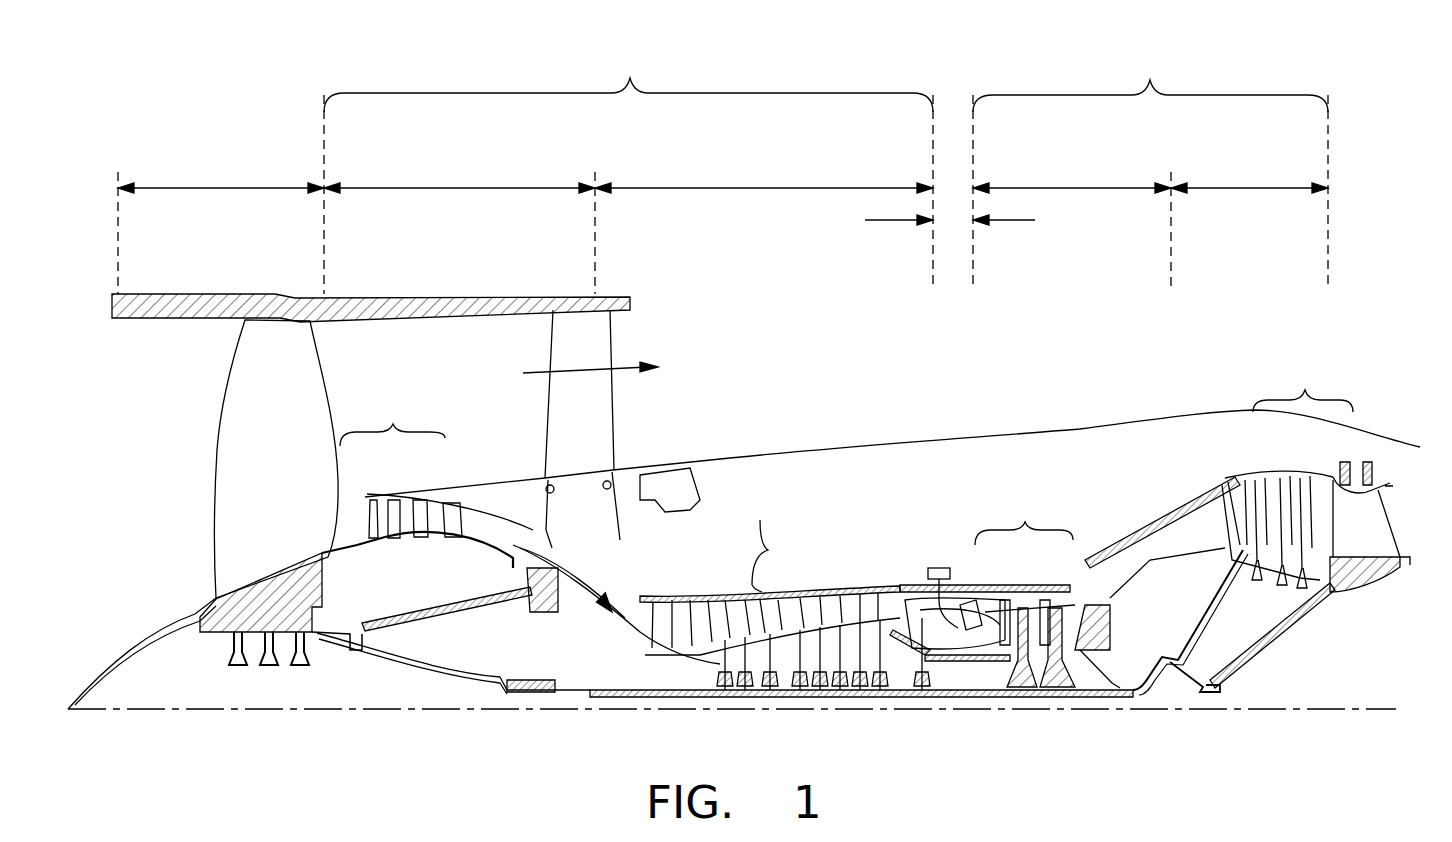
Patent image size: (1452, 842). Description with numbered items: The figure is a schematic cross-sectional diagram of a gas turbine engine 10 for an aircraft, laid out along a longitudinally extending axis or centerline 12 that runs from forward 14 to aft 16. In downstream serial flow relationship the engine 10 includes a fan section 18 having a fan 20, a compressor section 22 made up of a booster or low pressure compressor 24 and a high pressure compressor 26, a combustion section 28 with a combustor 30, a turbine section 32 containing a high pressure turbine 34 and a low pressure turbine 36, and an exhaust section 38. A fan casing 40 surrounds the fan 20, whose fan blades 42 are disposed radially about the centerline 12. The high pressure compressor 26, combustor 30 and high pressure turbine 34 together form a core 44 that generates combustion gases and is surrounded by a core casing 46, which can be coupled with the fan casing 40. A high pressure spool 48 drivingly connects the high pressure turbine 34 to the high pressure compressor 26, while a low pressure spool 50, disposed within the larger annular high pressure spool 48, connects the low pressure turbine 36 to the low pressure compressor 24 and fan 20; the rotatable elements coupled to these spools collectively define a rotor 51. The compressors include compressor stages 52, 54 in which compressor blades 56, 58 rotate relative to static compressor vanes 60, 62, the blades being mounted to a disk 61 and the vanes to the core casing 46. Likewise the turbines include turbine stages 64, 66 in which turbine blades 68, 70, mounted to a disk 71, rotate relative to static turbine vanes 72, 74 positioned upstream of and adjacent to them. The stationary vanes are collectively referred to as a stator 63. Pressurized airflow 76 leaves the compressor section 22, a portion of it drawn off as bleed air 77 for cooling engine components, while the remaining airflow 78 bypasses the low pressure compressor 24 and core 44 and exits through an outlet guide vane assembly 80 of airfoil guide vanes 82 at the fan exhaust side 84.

The gas turbine engine 10 is at (1346, 215).
The centerline 12 is at (203, 712).
The forward 14 is at (117, 433).
The aft 16 is at (1399, 528).
The fan section 18 is at (222, 188).
The fan 20 is at (180, 555).
The compressor section 22 is at (630, 78).
The low pressure compressor 24 is at (470, 188).
The high pressure compressor 26 is at (770, 188).
The combustion section 28 is at (880, 222).
The combustor 30 is at (976, 600).
The turbine section 32 is at (1150, 80).
The high pressure turbine 34 is at (1072, 188).
The low pressure turbine 36 is at (1248, 188).
The exhaust section 38 is at (1400, 500).
The fan casing 40 is at (358, 295).
The fan blades 42 is at (292, 362).
The core 44 is at (897, 470).
The core casing 46 is at (1152, 530).
The high pressure spool 48 is at (940, 660).
The low pressure spool 50 is at (530, 690).
The rotor 51 is at (795, 708).
The compressor stages of the LP compressor 52 is at (393, 424).
The compressor stages of the HP compressor 54 is at (775, 530).
The compressor blades of the LP compressor 56 is at (406, 504).
The compressor blades of the HP compressor 58 is at (686, 622).
The compressor vanes of the LP compressor 60 is at (380, 502).
The disk 61 is at (418, 538).
The compressor vanes of the HP compressor 62 is at (660, 603).
The stator 63 is at (660, 655).
The turbine stages of the HP turbine 64 is at (1025, 522).
The turbine stages of the LP turbine 66 is at (1305, 390).
The turbine blades of the HP turbine 68 is at (1033, 605).
The turbine blades of the LP turbine 70 is at (1315, 478).
The disk 71 is at (1043, 650).
The turbine vanes of the HP turbine 72 is at (1020, 600).
The turbine vanes of the LP turbine 74 is at (1297, 490).
The pressurized airflow 76 is at (568, 580).
The bleed air 77 is at (793, 590).
The airflow 78 is at (540, 372).
The outlet guide vane assembly 80 is at (638, 428).
The airfoil guide vanes 82 is at (558, 407).
The fan exhaust side 84 is at (636, 342).